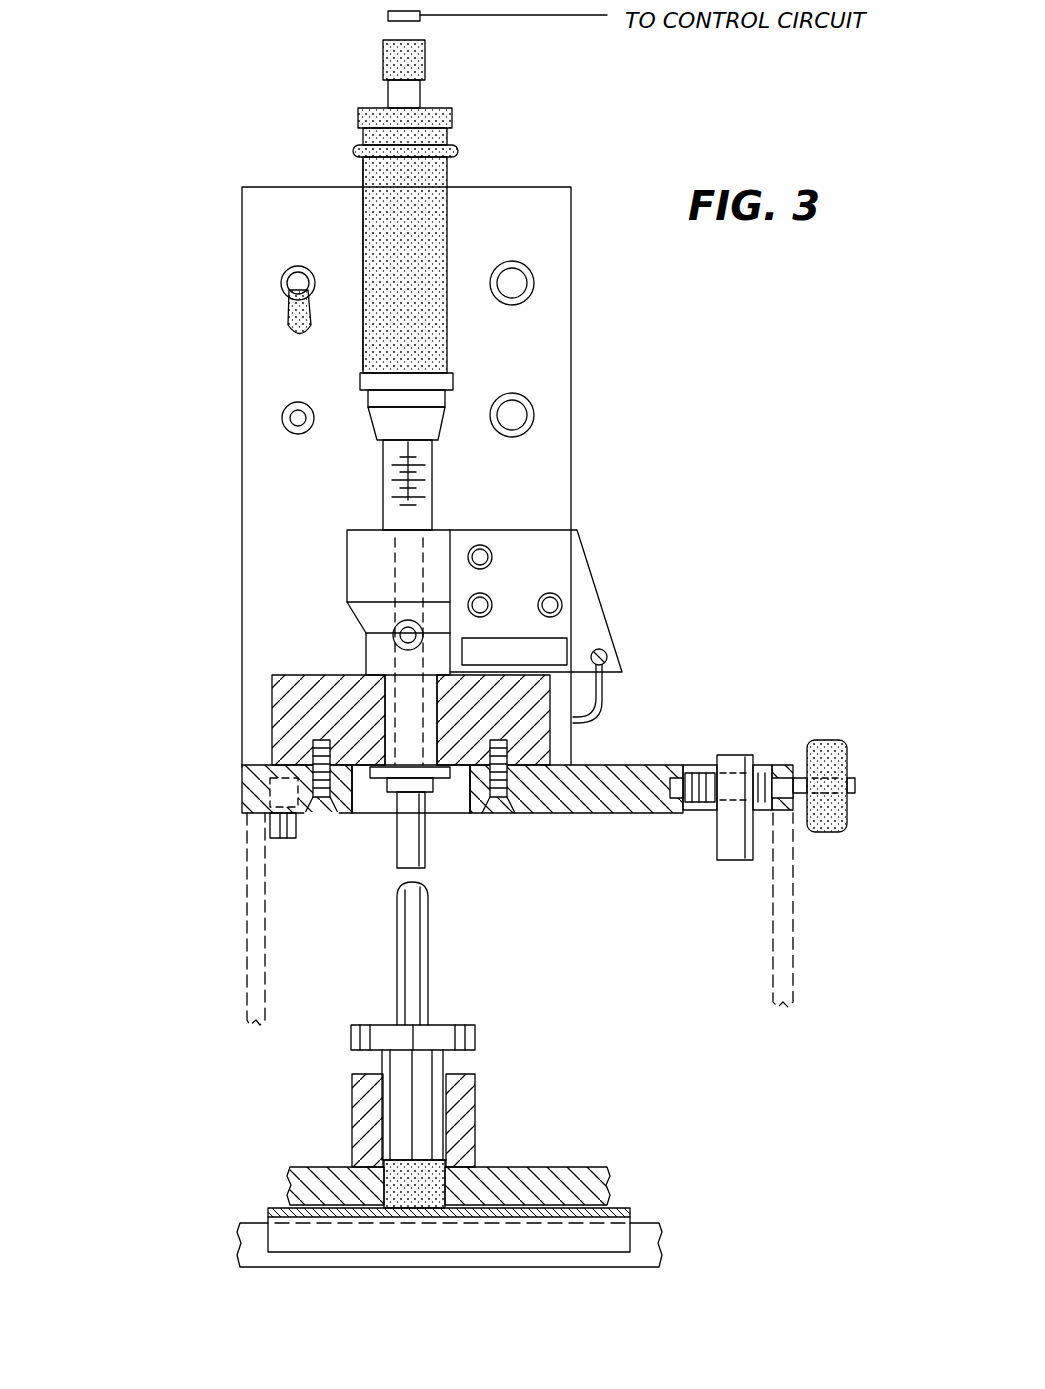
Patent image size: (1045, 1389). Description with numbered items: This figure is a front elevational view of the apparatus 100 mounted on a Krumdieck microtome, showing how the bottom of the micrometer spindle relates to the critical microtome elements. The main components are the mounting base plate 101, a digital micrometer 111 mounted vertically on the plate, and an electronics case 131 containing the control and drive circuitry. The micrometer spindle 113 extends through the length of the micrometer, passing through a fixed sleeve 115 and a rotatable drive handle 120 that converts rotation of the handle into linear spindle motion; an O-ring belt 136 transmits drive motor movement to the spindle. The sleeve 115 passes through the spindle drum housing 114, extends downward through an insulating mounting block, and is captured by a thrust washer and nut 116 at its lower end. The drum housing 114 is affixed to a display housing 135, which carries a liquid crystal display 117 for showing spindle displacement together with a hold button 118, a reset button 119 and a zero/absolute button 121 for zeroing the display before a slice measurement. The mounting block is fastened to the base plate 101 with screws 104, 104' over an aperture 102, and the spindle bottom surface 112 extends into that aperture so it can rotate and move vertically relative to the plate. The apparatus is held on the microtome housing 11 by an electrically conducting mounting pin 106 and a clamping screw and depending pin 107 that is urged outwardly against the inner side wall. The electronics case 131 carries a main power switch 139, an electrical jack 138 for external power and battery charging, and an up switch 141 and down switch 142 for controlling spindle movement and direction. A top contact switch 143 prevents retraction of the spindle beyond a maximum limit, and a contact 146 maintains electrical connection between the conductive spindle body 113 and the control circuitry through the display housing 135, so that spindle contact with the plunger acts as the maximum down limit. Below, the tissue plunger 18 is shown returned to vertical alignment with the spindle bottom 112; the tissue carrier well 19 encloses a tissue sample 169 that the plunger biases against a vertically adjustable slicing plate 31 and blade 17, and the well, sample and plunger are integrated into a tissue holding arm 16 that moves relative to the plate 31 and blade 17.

The apparatus 100 is at (200, 176).
The top contact switch 143 is at (388, 20).
The micrometer spindle 113 is at (400, 93).
The O-ring belt 136 is at (460, 150).
The digital micrometer 111 is at (455, 262).
The rotatable drive handle 120 is at (377, 221).
The electronics case 131 is at (578, 352).
The main power switch 139 is at (288, 325).
The electrical jack 138 is at (282, 418).
The up switch 141 is at (532, 283).
The down switch 142 is at (535, 412).
The fixed sleeve 115 is at (385, 475).
The spindle drum housing 114 is at (357, 553).
The display housing 135 is at (592, 562).
The hold button 118 is at (480, 545).
The reset button 119 is at (495, 605).
The zero/absolute button 121 is at (563, 603).
The liquid crystal display 117 is at (567, 648).
The contact 146 is at (604, 713).
The mounting base plate 101 is at (660, 762).
The clamping screw and depending pin 107 is at (740, 855).
The screw 104 is at (325, 812).
The screw 104' is at (527, 797).
The mounting pin 106 is at (282, 838).
The thrust washer and nut 116 is at (378, 775).
The aperture 102 is at (465, 793).
The spindle bottom surface 112 is at (425, 866).
The microtome housing 11 is at (235, 936).
The tissue plunger 18 is at (436, 948).
The tissue carrier well 19 is at (470, 1093).
The tissue holding arm 16 is at (300, 1160).
The blade 17 is at (275, 1212).
The slicing plate 31 is at (248, 1228).
The tissue sample 169 is at (420, 1190).